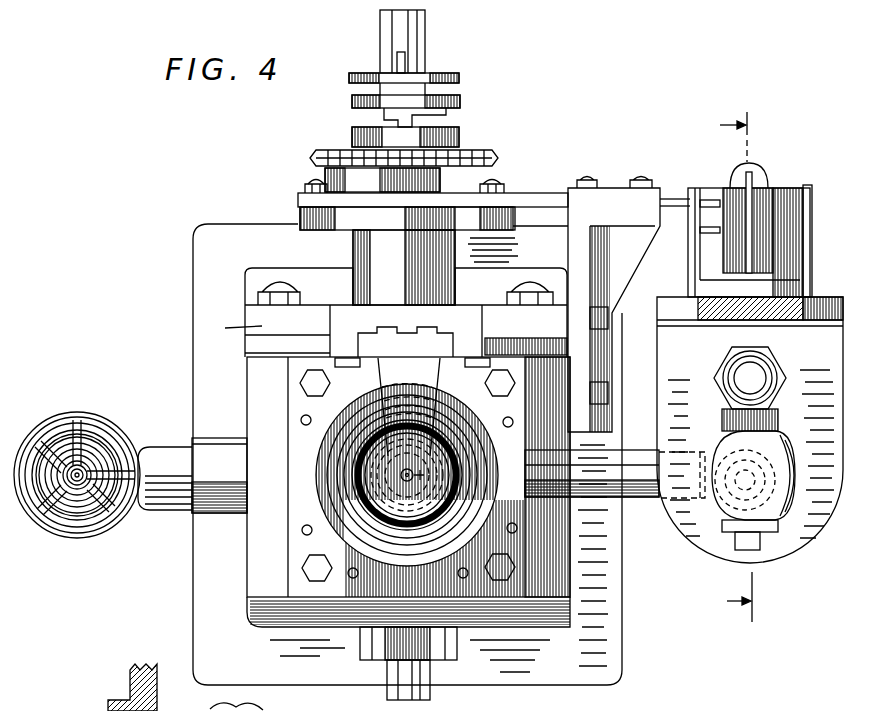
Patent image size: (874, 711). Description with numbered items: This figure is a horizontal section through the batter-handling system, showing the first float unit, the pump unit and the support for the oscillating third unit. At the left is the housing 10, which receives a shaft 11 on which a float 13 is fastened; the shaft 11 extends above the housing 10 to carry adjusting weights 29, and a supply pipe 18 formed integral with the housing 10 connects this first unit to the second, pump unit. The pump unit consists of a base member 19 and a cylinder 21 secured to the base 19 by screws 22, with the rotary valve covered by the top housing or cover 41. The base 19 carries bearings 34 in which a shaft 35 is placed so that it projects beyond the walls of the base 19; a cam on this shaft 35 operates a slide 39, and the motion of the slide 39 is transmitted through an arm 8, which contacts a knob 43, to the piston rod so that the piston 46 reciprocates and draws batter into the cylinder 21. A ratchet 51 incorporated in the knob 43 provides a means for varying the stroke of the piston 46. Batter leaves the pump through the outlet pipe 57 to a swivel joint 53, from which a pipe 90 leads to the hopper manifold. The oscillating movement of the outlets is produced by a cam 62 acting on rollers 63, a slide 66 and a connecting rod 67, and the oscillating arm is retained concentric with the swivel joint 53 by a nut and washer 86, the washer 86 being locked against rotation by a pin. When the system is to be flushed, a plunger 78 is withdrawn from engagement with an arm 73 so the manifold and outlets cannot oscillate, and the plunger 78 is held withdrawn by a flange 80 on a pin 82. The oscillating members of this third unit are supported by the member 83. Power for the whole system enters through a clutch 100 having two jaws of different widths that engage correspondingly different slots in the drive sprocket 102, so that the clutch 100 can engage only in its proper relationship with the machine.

The arm 8 is at (371, 382).
The housing 10 is at (92, 416).
The shaft 11 is at (75, 440).
The float 13 is at (103, 446).
The supply pipe 18 is at (162, 505).
The base member 19 is at (268, 640).
The cylinder 21 is at (345, 446).
The screws 22 is at (300, 384).
The adjusting weights 29 is at (58, 508).
The bearings 34 is at (462, 656).
The shaft 35 is at (431, 40).
The slide 39 is at (438, 337).
The cover 41 is at (262, 326).
The knob 43 is at (447, 454).
The piston 46 is at (366, 506).
The ratchet 51 is at (408, 462).
The swivel joint 53 is at (790, 508).
The outlet pipe 57 is at (650, 500).
The cam 62 is at (388, 235).
The rollers 63 is at (320, 231).
The slide 66 is at (612, 193).
The connecting rod 67 is at (543, 197).
The arm 73 is at (790, 326).
The plunger 78 is at (762, 172).
The flange 80 is at (727, 190).
The pin 82 is at (774, 188).
The support member 83 is at (665, 383).
The washer 86 is at (812, 196).
The pipe 90 is at (730, 370).
The clutch 100 is at (450, 118).
The drive sprocket 102 is at (497, 160).